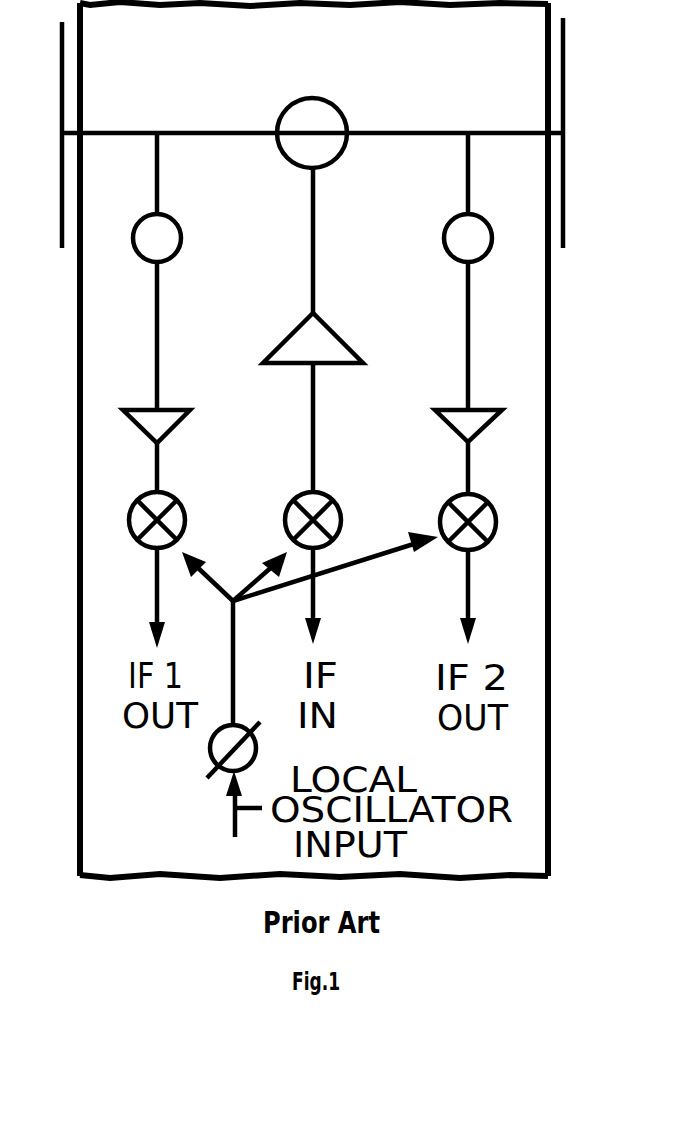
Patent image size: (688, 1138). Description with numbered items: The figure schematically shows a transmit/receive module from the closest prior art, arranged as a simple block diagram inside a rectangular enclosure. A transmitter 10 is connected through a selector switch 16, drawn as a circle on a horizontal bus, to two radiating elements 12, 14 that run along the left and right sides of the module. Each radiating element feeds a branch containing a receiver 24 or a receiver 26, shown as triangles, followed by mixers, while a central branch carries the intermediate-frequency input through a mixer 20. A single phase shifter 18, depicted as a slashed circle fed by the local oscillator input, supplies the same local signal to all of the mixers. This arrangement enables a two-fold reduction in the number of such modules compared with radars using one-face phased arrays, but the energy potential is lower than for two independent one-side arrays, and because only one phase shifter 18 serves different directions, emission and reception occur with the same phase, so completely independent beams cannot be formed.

The transmitter 10 is at (333, 325).
The radiating element 12 is at (58, 228).
The radiating element 14 is at (567, 230).
The selector switch 16 is at (340, 112).
The phase shifter 18 is at (210, 752).
The mixer 20 is at (357, 490).
The receiver 24 is at (178, 410).
The receiver 26 is at (448, 408).